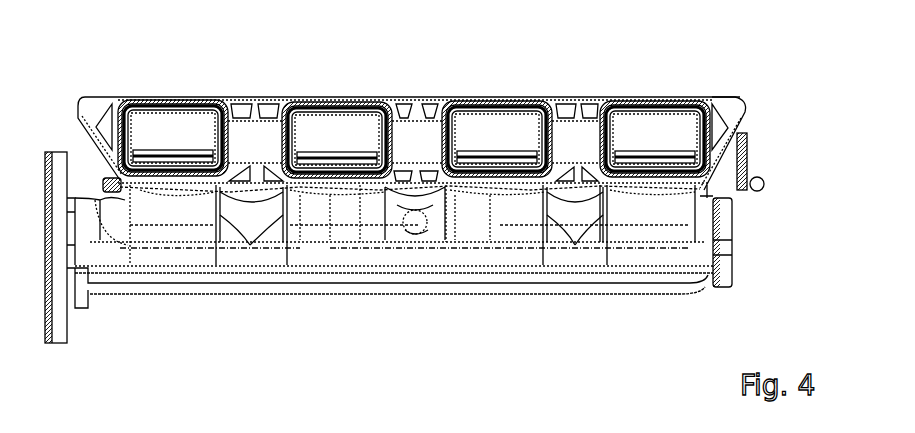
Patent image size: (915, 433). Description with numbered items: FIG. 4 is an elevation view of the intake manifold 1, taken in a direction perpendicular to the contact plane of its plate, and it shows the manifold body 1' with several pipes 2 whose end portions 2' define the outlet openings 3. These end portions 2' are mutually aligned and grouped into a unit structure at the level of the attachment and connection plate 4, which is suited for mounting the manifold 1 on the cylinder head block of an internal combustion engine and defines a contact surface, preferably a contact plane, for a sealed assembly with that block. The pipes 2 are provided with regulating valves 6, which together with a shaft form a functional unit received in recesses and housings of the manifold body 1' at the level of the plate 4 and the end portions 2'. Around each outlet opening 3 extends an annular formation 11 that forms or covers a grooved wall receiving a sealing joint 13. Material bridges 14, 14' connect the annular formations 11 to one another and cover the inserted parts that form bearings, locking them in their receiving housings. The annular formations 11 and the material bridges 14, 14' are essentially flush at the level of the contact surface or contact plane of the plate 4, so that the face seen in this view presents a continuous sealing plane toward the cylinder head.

The intake manifold 1 is at (438, 255).
The manifold body 1' is at (388, 255).
The pipes 2 is at (395, 276).
The end portions 2' is at (245, 94).
The outlet openings 3 is at (255, 95).
The attachment and connection plate 4 is at (255, 100).
The valves 6 is at (503, 133).
The annular formations 11 is at (497, 107).
The sealing joints 13 is at (669, 116).
The material bridges 14 is at (674, 117).
The material bridges 14' is at (585, 114).